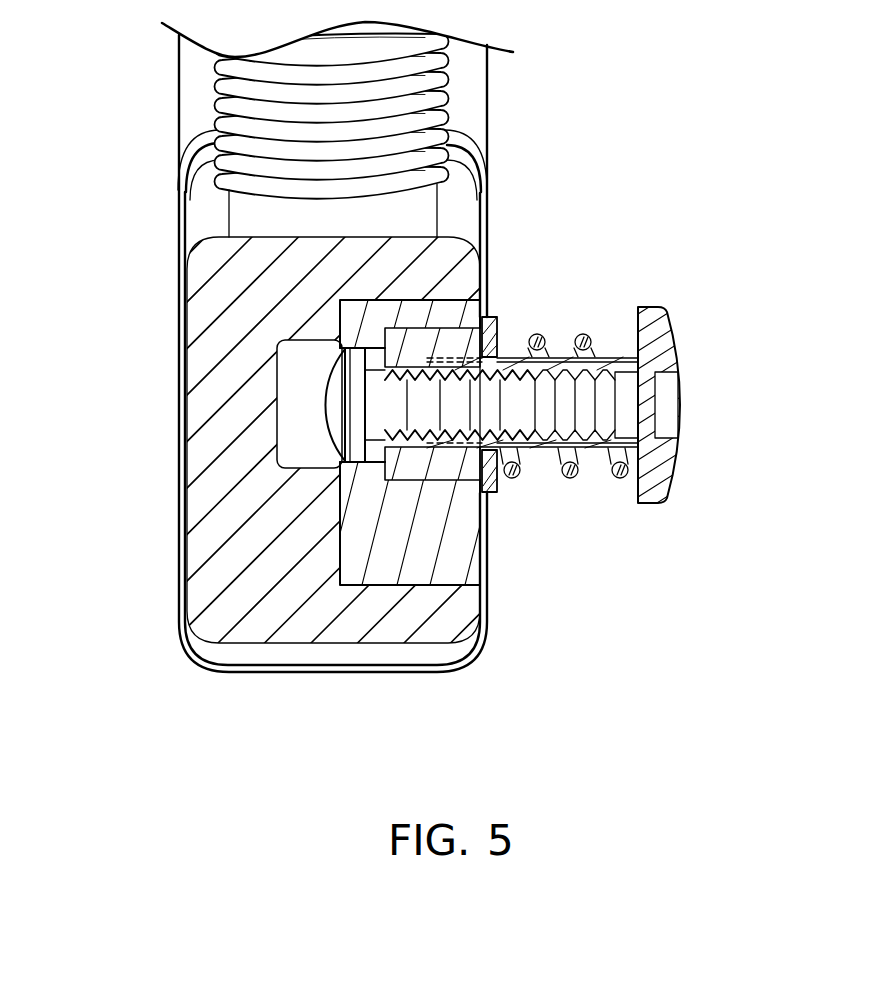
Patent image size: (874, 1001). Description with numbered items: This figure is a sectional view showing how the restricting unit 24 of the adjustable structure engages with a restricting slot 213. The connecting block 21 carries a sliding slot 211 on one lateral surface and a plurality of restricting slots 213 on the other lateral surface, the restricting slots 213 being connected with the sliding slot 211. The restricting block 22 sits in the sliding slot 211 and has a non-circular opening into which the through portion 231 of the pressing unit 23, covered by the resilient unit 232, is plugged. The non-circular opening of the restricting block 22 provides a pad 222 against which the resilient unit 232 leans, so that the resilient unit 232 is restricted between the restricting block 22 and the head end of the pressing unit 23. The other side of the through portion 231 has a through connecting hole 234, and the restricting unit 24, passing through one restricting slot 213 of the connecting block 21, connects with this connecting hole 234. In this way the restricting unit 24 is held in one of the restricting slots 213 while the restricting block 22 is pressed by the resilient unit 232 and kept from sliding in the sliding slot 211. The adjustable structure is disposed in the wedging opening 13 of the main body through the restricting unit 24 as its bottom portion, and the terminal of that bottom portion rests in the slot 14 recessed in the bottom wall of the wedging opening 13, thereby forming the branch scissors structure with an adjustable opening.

The wedging opening 13 is at (352, 583).
The slot 14 is at (285, 372).
The connecting block 21 is at (452, 500).
The sliding slot 211 is at (390, 344).
The restricting slot 213 is at (340, 344).
The restricting block 22 is at (529, 447).
The pad 222 is at (493, 327).
The pressing unit 23 is at (673, 347).
The through portion 231 is at (597, 422).
The resilient unit 232 is at (582, 333).
The connecting hole 234 is at (527, 432).
The restricting unit 24 is at (337, 430).